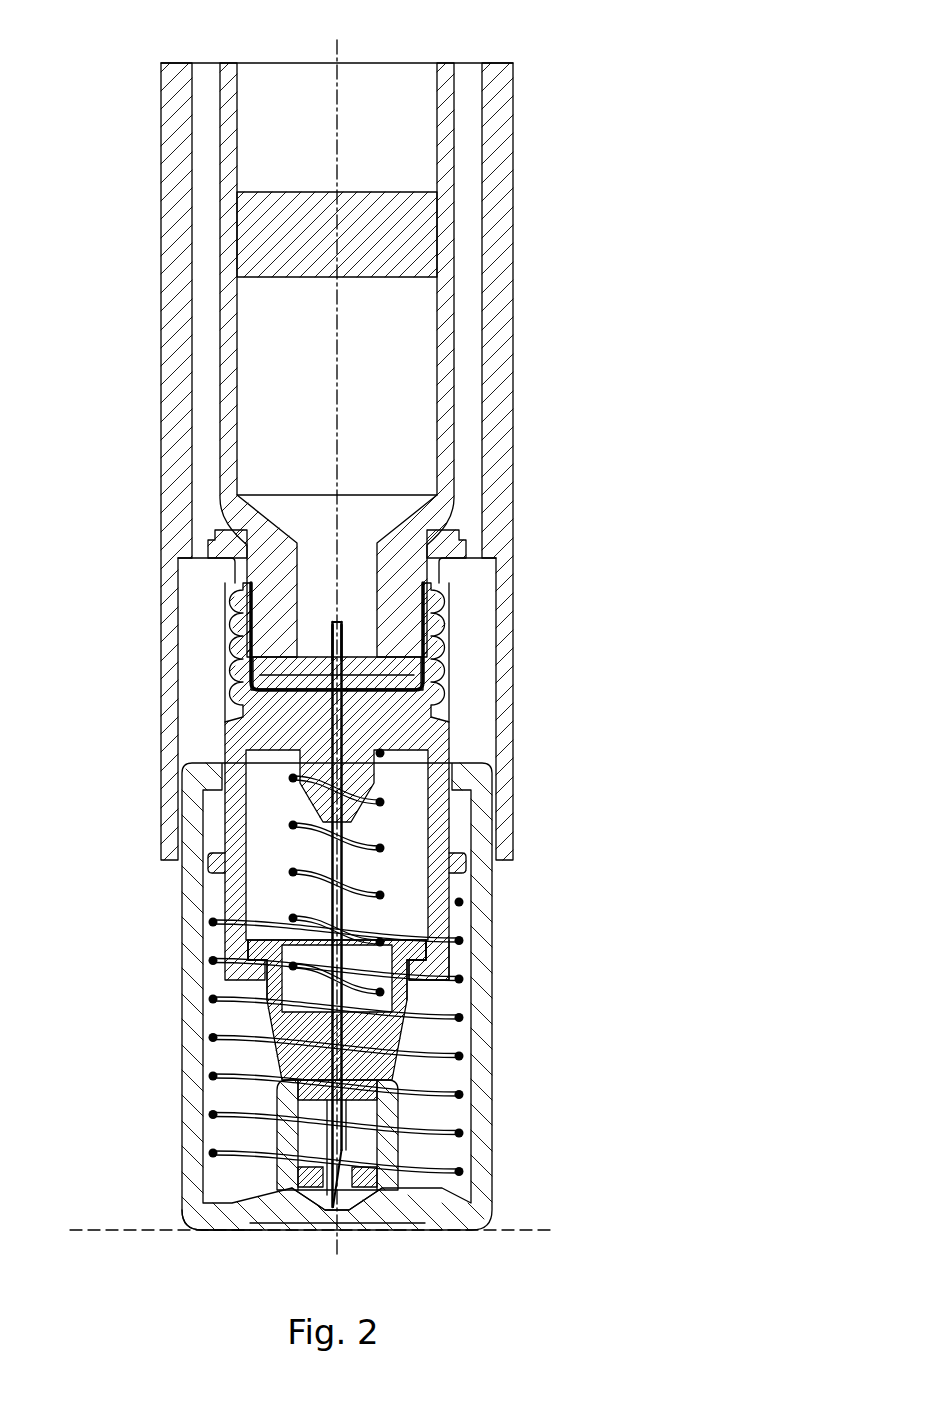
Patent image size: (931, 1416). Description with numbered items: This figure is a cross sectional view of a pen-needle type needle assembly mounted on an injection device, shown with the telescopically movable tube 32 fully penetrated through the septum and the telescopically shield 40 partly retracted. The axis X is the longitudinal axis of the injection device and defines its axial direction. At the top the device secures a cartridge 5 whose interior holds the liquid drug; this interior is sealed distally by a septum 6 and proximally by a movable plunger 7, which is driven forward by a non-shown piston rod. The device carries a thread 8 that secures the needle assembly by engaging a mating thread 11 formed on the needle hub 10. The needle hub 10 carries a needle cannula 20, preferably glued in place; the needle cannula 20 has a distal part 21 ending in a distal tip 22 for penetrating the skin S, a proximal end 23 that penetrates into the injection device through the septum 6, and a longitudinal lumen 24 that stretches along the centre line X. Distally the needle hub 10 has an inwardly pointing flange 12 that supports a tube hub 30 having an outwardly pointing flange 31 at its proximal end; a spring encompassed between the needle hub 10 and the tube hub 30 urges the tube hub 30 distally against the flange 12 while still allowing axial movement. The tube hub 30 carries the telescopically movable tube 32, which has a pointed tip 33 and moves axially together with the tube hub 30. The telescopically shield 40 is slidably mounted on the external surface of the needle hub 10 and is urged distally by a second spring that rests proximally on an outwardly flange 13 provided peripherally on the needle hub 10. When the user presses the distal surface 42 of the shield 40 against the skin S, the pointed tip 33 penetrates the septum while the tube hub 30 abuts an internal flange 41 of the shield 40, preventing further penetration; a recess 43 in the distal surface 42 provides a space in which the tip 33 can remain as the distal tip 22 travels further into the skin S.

The longitudinal axis X is at (337, 90).
The cartridge 5 is at (443, 385).
The septum 6 is at (425, 683).
The movable plunger 7 is at (398, 257).
The thread 8 is at (443, 589).
The needle hub 10 is at (237, 735).
The thread 11 is at (447, 647).
The inwardly pointing flange 12 is at (417, 972).
The outwardly flange 13 is at (212, 868).
The needle cannula 20 is at (300, 999).
The distal part 21 is at (340, 912).
The distal tip 22 is at (340, 1168).
The proximal end 23 is at (332, 652).
The longitudinal lumen 24 is at (337, 635).
The tube hub 30 is at (282, 1038).
The outwardly pointing flange 31 is at (423, 950).
The telescopically movable tube 32 is at (368, 1155).
The pointed tip 33 is at (340, 1190).
The telescopically shield 40 is at (478, 1083).
The internal flange 41 is at (287, 1125).
The distal surface 42 is at (220, 1222).
The recess 43 is at (380, 1213).
The skin S is at (125, 1232).